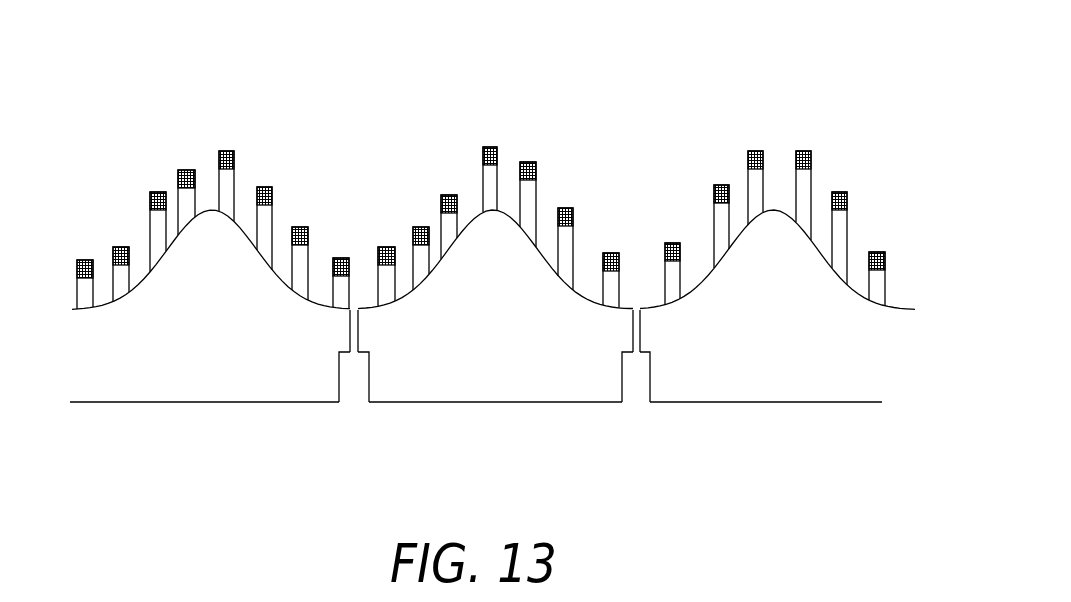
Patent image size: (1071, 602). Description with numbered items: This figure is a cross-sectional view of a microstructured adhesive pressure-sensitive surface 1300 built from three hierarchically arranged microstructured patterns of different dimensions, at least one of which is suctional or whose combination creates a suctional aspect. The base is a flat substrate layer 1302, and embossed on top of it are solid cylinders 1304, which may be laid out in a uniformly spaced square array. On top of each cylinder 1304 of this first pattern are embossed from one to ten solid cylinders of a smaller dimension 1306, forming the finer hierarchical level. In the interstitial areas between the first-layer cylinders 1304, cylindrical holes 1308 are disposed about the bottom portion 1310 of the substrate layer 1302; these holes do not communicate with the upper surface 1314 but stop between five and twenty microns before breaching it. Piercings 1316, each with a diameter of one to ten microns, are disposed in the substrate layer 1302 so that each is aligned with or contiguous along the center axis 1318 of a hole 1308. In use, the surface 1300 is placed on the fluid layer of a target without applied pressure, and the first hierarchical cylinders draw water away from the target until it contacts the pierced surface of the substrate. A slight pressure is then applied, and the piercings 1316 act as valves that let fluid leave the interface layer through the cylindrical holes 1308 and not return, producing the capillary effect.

The microstructured adhesive pressure-sensitive surface 1300 is at (641, 88).
The substrate layer 1302 is at (862, 362).
The solid cylinders 1304 is at (900, 296).
The solid cylinders of a smaller dimension 1306 is at (757, 142).
The cylindrical holes 1308 is at (363, 370).
The bottom portion 1310 is at (522, 405).
The upper surface 1314 is at (272, 265).
The piercings 1316 is at (357, 310).
The center axis 1318 is at (353, 352).